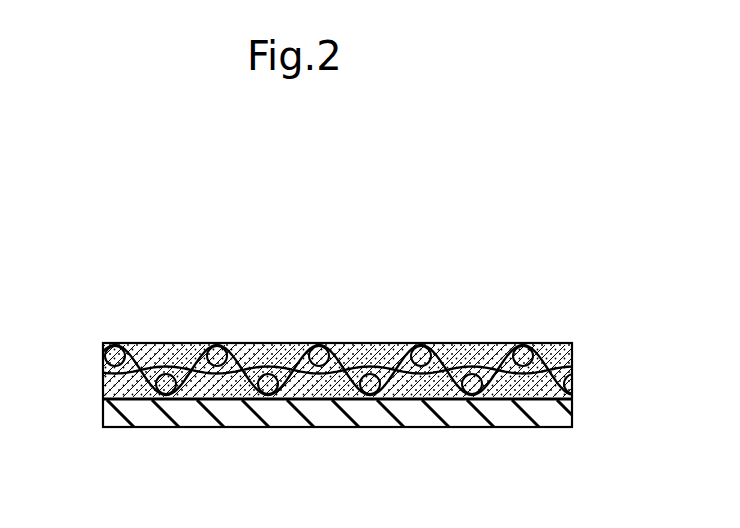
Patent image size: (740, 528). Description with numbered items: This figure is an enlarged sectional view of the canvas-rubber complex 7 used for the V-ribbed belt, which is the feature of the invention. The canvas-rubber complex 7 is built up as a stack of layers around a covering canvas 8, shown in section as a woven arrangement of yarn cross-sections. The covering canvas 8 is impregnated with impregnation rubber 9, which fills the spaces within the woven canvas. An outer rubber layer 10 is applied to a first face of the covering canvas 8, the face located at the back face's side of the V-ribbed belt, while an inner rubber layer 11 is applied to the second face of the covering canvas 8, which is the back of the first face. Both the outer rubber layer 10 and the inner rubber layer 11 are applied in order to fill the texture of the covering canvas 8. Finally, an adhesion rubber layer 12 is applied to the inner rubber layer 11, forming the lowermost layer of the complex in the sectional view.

The canvas-rubber complex 7 is at (324, 312).
The covering canvas 8 is at (103, 386).
The impregnation rubber 9 is at (573, 357).
The outer rubber layer 10 is at (550, 345).
The inner rubber layer 11 is at (572, 385).
The adhesion rubber layer 12 is at (565, 417).